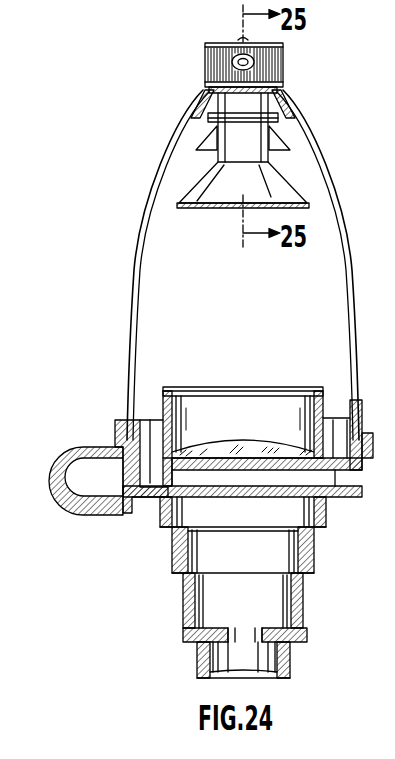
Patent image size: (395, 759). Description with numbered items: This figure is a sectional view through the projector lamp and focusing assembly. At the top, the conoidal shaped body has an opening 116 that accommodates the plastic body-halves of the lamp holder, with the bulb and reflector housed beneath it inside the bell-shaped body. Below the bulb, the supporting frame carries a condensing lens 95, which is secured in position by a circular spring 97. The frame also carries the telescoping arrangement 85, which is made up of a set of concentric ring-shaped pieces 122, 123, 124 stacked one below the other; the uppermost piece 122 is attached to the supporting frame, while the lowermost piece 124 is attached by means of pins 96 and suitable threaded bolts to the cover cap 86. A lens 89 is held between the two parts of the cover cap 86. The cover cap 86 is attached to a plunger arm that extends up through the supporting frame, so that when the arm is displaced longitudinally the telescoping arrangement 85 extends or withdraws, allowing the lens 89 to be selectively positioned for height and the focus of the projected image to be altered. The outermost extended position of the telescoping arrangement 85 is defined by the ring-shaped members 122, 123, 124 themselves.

The opening 116 is at (279, 93).
The circular spring 97 is at (172, 450).
The condensing lens 95 is at (250, 446).
The uppermost ring-shaped piece 122 is at (322, 532).
The telescoping arrangement 85 is at (326, 560).
The intermediate ring-shaped piece 123 is at (310, 573).
The pins 96 is at (303, 617).
The lowermost ring-shaped piece 124 is at (289, 625).
The cover cap 86 is at (288, 662).
The lens 89 is at (218, 659).